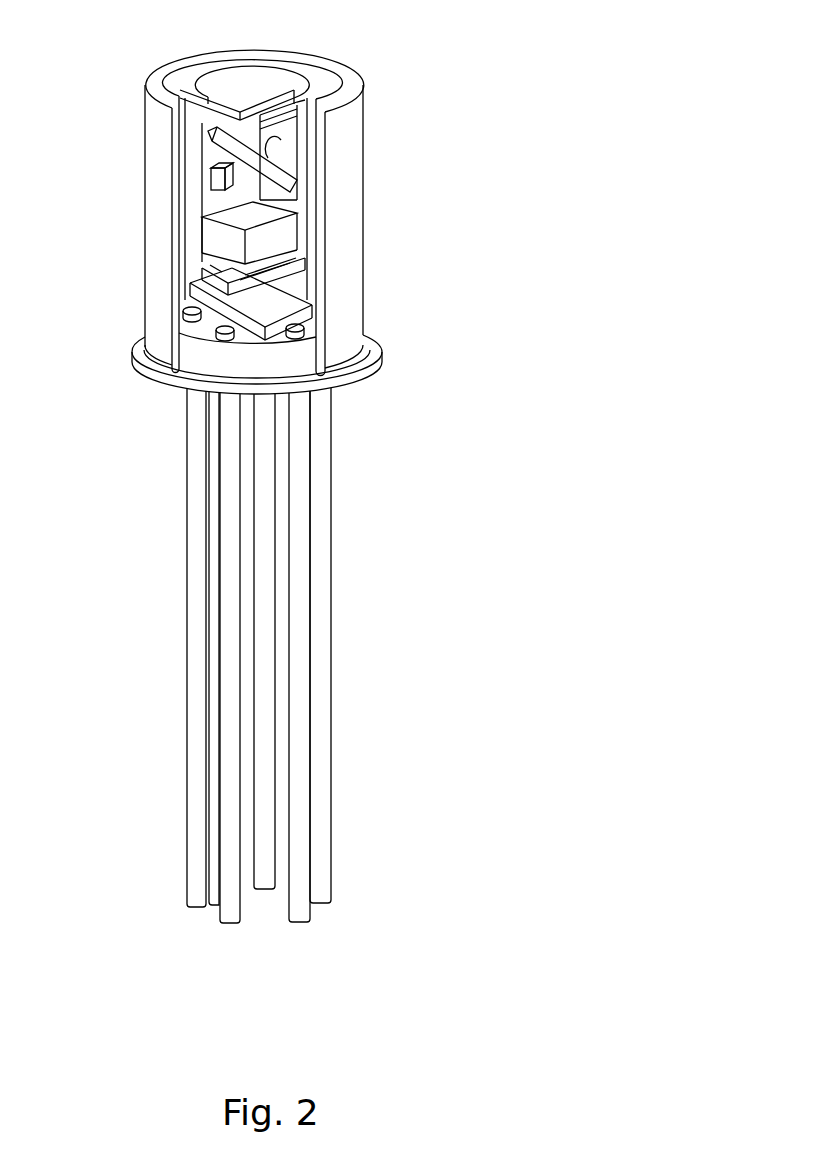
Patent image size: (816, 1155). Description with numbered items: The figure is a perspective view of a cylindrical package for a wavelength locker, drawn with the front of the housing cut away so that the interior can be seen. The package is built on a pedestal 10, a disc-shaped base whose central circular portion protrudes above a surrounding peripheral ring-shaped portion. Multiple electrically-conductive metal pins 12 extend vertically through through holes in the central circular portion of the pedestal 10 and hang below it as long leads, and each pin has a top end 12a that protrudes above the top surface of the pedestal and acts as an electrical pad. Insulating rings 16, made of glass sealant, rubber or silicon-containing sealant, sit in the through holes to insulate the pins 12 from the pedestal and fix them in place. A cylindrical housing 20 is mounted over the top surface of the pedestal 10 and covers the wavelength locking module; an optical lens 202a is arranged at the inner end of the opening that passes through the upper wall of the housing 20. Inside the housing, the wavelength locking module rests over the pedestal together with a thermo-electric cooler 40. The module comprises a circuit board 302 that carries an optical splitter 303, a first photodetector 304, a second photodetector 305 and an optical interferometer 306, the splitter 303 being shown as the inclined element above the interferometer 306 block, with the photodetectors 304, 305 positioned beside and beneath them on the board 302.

The pedestal 10 is at (358, 381).
The electrically-conductive metal pins 12 is at (332, 510).
The top end 12a is at (190, 345).
The insulating rings 16 is at (316, 332).
The cylindrical housing 20 is at (356, 178).
The thermo-electric cooler 40 is at (188, 307).
The optical lens 202a is at (256, 82).
The circuit board 302 is at (188, 176).
The optical splitter 303 is at (207, 138).
The first photodetector 304 is at (305, 152).
The second photodetector 305 is at (300, 271).
The optical interferometer 306 is at (213, 236).